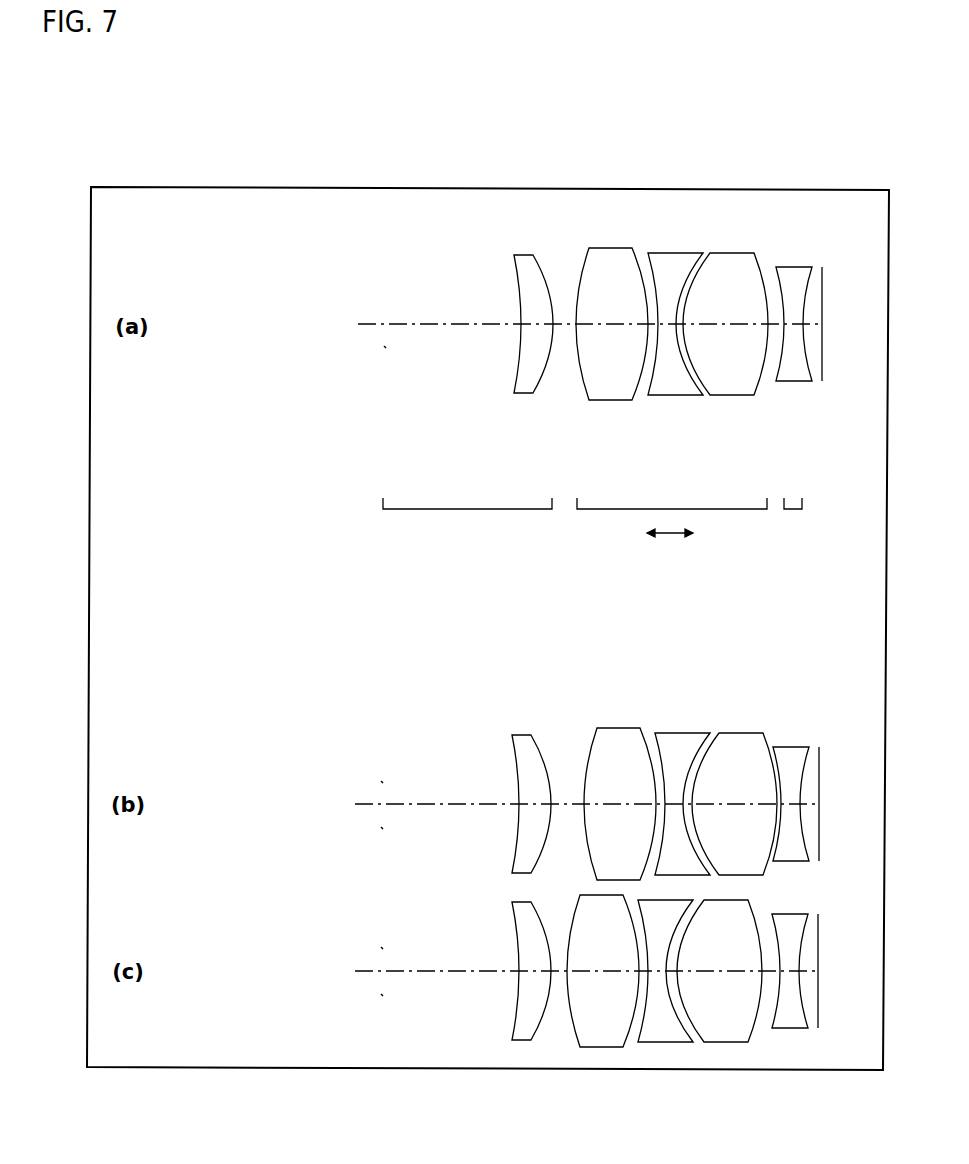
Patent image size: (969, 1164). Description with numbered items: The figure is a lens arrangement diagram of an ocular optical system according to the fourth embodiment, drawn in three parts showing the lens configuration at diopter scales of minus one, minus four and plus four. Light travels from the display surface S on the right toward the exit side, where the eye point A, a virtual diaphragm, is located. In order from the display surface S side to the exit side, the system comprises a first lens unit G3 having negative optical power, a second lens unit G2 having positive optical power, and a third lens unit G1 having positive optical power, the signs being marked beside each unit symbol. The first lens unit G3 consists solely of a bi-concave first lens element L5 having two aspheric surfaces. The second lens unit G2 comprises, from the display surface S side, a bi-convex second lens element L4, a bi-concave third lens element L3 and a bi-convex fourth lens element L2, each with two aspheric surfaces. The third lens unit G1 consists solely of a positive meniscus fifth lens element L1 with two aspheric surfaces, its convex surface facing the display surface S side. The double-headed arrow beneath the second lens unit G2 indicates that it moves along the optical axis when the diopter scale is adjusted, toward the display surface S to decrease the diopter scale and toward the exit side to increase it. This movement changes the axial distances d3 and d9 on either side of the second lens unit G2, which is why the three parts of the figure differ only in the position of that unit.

The eye point A is at (385, 307).
The fifth lens element L1 is at (526, 262).
The fourth lens element L2 is at (611, 257).
The third lens element L3 is at (675, 260).
The second lens element L4 is at (732, 260).
The first lens element L5 is at (794, 277).
The display surface S is at (823, 302).
The axial distance d3 is at (562, 324).
The axial distance d9 is at (777, 324).
The third lens unit G1 is at (467, 509).
The second lens unit G2 is at (672, 533).
The first lens unit G3 is at (793, 509).